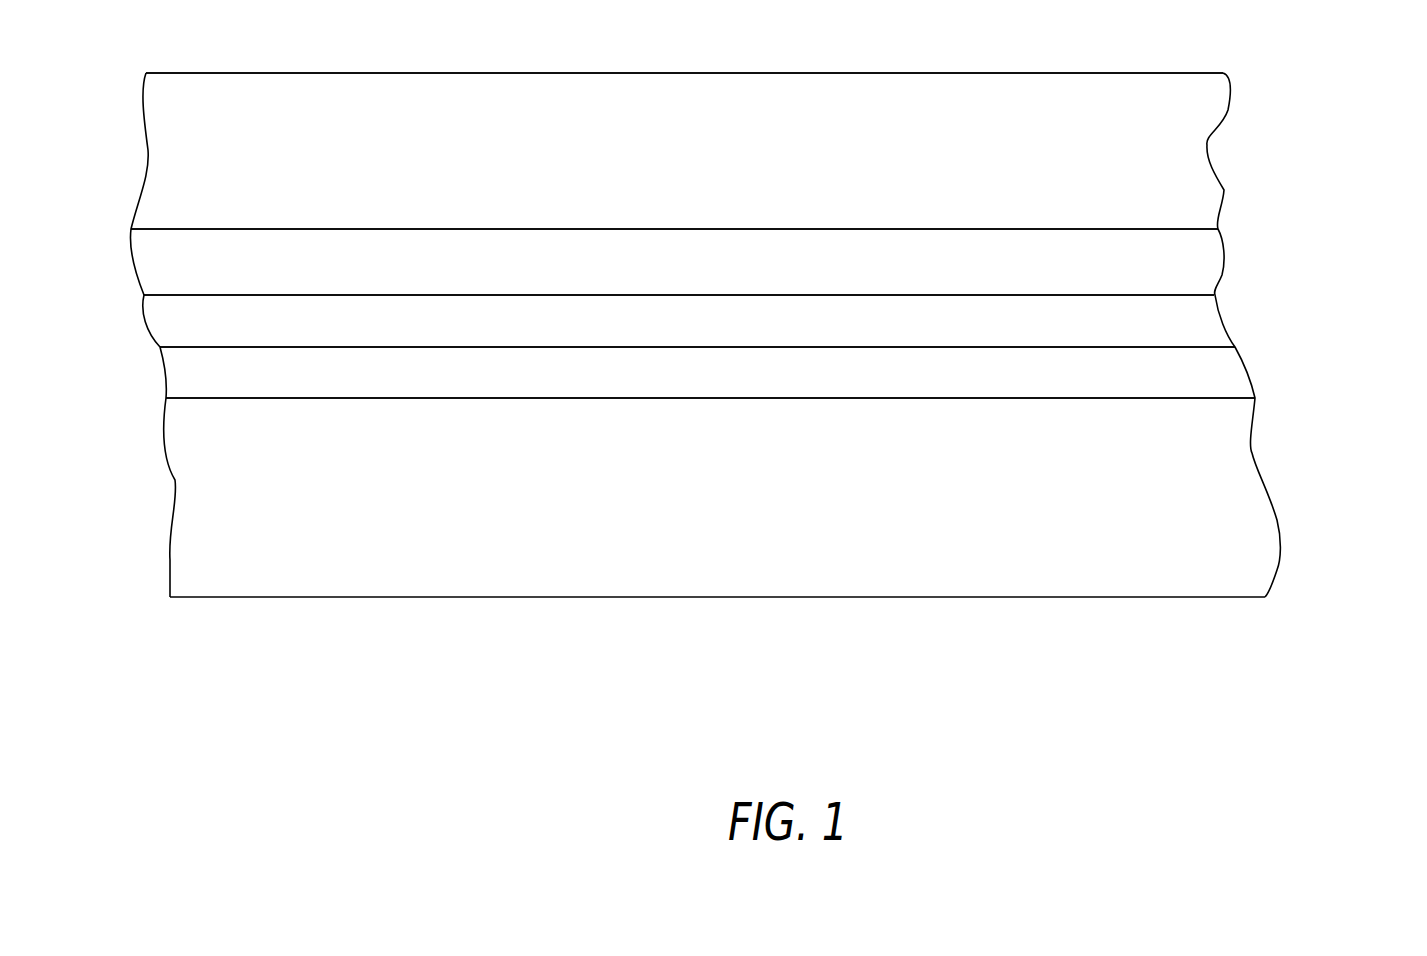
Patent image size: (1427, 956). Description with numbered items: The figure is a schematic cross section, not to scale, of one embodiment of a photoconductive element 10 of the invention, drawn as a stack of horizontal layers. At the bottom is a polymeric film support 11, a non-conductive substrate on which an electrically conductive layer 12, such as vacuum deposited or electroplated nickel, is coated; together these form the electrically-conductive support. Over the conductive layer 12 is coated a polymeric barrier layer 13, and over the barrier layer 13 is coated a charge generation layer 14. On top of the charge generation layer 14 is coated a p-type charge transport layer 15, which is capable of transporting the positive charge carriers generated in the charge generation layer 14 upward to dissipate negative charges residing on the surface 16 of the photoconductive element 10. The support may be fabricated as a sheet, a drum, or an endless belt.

The photoconductive element 10 is at (1330, 370).
The polymeric film support 11 is at (1277, 520).
The electrically conductive layer 12 is at (166, 380).
The polymeric barrier layer 13 is at (142, 321).
The charge generation layer 14 is at (130, 255).
The p-type charge transport layer 15 is at (1222, 192).
The surface 16 is at (1108, 73).